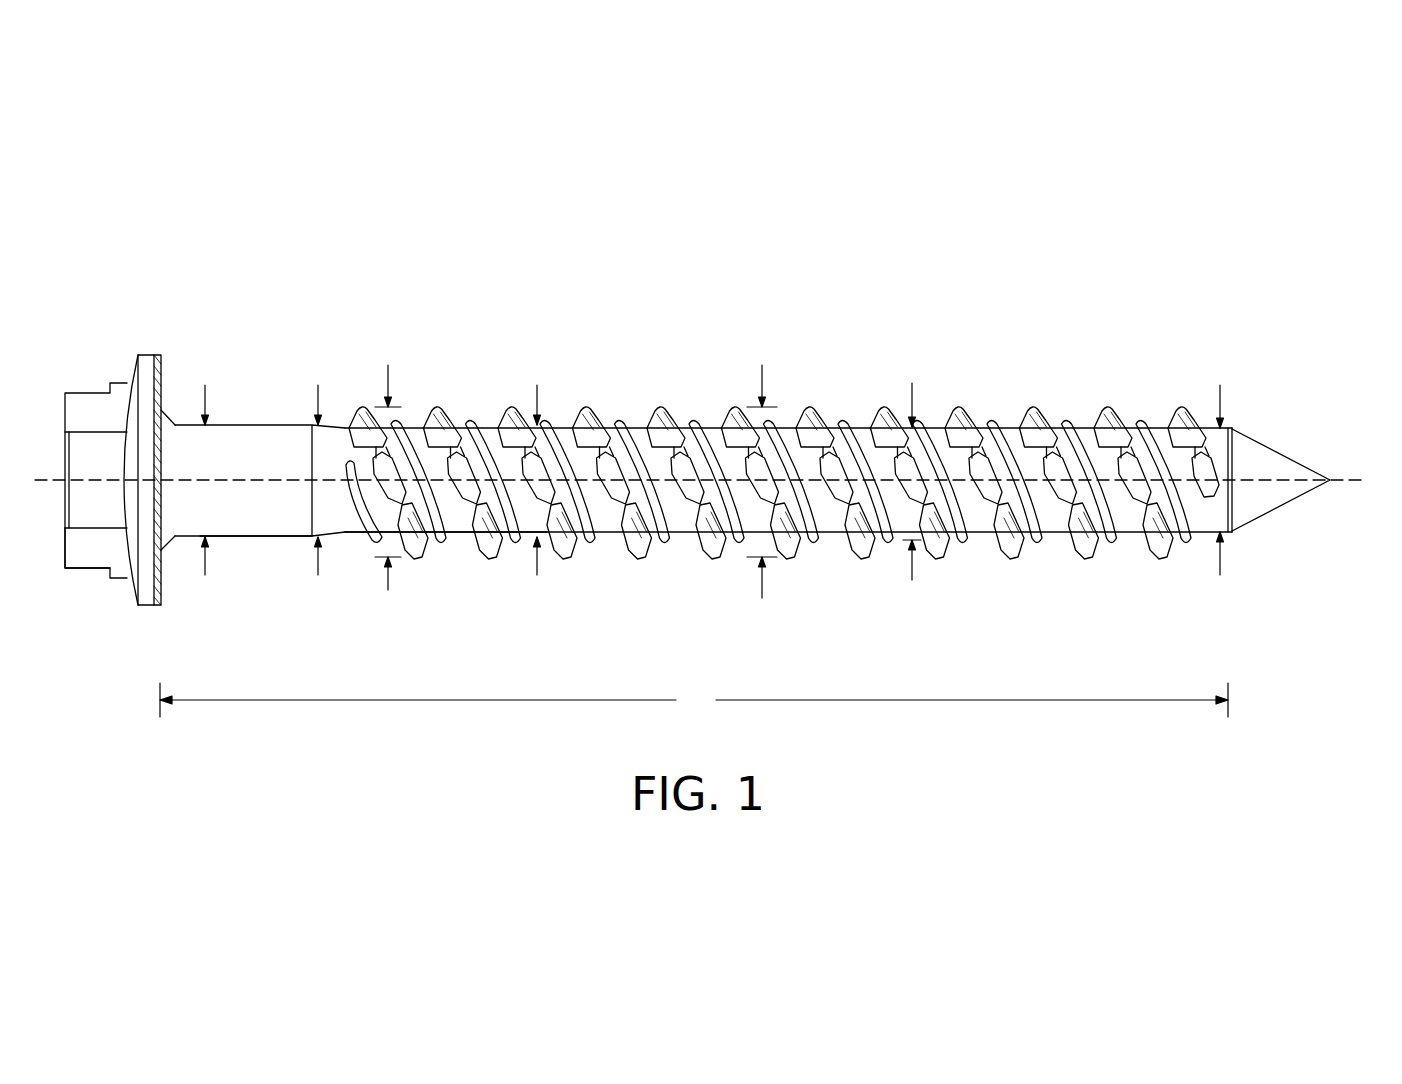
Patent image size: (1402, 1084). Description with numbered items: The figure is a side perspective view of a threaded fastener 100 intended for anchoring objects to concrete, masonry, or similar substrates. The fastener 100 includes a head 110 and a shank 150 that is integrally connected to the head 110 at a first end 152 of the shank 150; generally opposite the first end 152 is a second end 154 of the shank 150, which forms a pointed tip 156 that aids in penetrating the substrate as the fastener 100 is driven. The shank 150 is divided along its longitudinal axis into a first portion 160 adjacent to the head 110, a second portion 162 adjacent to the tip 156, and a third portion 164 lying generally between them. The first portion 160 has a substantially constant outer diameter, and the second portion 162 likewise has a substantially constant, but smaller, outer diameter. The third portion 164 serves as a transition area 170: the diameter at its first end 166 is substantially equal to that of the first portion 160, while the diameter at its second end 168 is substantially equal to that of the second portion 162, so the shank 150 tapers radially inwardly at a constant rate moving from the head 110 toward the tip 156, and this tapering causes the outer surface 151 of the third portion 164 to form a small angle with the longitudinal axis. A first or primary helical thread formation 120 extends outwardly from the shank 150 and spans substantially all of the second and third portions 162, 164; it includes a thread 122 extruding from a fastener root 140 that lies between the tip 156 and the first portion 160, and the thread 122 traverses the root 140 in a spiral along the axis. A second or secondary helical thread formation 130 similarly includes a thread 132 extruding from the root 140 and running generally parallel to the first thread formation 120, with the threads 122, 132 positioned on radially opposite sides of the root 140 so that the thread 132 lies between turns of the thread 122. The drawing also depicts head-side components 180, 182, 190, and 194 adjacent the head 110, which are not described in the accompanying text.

The threaded fastener 100 is at (273, 241).
The head 110 is at (78, 400).
The first helical thread formation 120 is at (1112, 425).
The thread 122 is at (963, 425).
The second helical thread formation 130 is at (997, 427).
The thread 132 is at (975, 538).
The fastener root 140 is at (1158, 448).
The shank 150 is at (620, 430).
The outer surface 151 is at (430, 445).
The first end 152 is at (173, 545).
The second end 154 is at (1233, 536).
The tip 156 is at (1287, 452).
The first portion 160 is at (312, 366).
The second portion 162 is at (547, 297).
The third portion 164 is at (313, 332).
The first end of third portion 166 is at (298, 538).
The second end of third portion 168 is at (548, 540).
The transition area 170 is at (313, 613).
The drive head 180 is at (60, 440).
The head flange 182 is at (88, 552).
The sealing washer 190 is at (147, 365).
The bearing flange 194 is at (155, 492).